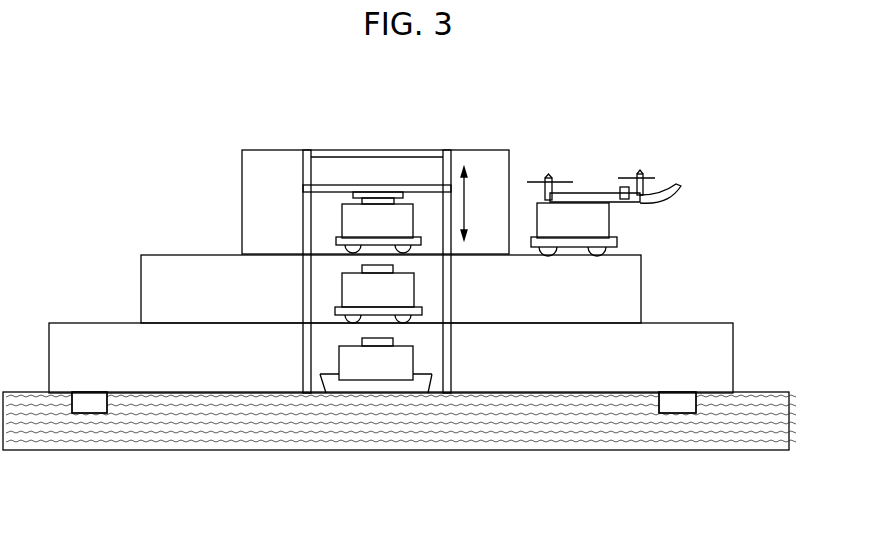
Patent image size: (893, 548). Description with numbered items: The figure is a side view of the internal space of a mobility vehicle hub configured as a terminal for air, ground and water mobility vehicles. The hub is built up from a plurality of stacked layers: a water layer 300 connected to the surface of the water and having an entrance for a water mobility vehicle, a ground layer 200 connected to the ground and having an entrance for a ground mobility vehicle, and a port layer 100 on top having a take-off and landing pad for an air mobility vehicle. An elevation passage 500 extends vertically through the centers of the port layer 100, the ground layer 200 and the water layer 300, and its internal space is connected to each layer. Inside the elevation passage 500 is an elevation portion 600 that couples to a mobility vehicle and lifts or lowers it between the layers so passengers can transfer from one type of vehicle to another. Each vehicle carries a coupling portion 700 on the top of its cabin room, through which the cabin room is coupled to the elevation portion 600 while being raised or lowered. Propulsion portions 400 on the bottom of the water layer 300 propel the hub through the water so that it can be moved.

The port layer 100 is at (487, 150).
The ground layer 200 is at (641, 288).
The water layer 300 is at (733, 357).
The propulsion portion 400 is at (88, 405).
The elevation passage 500 is at (330, 155).
The elevation portion 600 is at (398, 193).
The coupling portion 700 is at (380, 193).